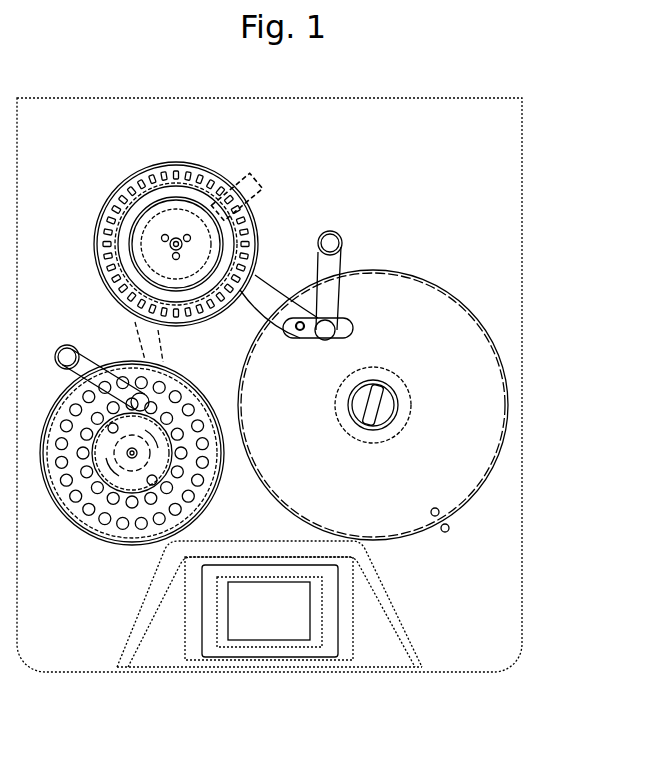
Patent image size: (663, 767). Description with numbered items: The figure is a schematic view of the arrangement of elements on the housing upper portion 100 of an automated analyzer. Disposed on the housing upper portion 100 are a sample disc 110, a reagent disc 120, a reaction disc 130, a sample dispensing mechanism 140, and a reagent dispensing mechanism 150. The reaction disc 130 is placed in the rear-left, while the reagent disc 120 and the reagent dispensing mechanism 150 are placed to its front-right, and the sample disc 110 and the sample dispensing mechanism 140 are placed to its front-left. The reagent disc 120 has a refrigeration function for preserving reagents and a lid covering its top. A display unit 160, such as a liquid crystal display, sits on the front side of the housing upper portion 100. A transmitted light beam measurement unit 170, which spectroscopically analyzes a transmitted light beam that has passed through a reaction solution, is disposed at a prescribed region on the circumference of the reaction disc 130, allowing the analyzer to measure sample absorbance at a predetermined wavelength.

The housing upper portion 100 is at (510, 588).
The sample disc 110 is at (68, 515).
The reagent disc 120 is at (493, 378).
The reaction disc 130 is at (112, 196).
The sample dispensing mechanism 140 is at (70, 342).
The reagent dispensing mechanism 150 is at (340, 258).
The display unit 160 is at (237, 633).
The transmitted light beam measurement unit 170 is at (255, 185).